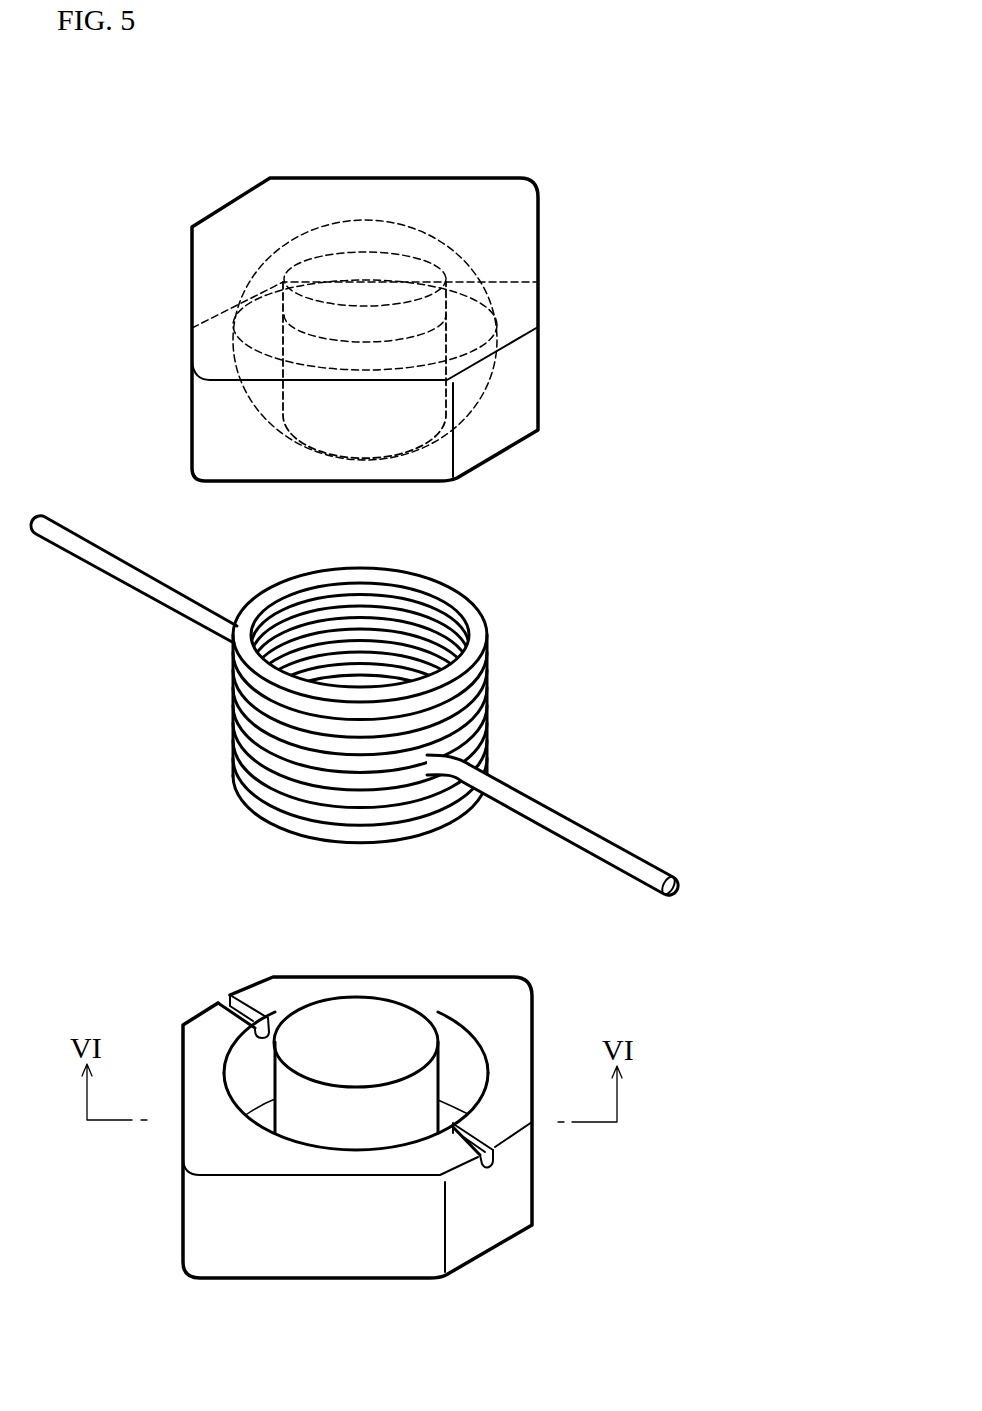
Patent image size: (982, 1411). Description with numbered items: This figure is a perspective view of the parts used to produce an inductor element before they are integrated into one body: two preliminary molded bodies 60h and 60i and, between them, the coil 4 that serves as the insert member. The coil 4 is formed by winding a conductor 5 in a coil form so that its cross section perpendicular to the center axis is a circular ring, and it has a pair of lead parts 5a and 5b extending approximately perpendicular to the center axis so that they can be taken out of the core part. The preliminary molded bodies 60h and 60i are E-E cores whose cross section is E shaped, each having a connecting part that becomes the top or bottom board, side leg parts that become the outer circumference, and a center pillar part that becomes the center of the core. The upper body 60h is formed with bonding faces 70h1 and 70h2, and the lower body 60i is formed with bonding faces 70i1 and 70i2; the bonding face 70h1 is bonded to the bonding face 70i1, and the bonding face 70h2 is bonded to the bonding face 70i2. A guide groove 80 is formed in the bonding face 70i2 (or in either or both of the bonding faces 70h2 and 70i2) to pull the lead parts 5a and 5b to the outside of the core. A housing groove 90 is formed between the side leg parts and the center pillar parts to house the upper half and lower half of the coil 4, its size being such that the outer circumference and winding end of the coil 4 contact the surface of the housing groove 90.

The preliminary molded body 60h is at (517, 240).
The bonding face 70h1 is at (390, 458).
The bonding face 70h2 is at (235, 482).
The coil 4 is at (363, 701).
The conductor 5 is at (263, 811).
The lead part 5a is at (108, 565).
The lead part 5b is at (590, 835).
The preliminary molded body 60i is at (505, 1200).
The bonding face 70i1 is at (360, 1030).
The bonding face 70i2 is at (214, 1137).
The guide groove 80 is at (250, 1013).
The housing groove 90 is at (465, 1063).